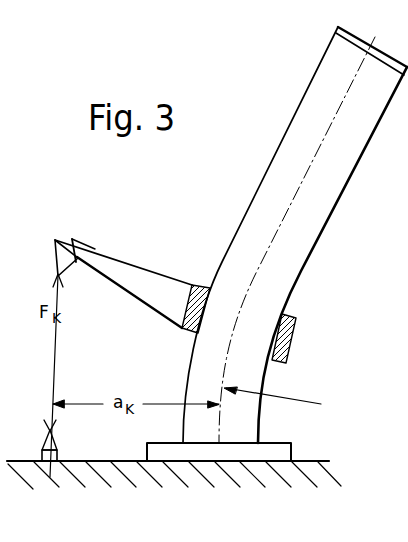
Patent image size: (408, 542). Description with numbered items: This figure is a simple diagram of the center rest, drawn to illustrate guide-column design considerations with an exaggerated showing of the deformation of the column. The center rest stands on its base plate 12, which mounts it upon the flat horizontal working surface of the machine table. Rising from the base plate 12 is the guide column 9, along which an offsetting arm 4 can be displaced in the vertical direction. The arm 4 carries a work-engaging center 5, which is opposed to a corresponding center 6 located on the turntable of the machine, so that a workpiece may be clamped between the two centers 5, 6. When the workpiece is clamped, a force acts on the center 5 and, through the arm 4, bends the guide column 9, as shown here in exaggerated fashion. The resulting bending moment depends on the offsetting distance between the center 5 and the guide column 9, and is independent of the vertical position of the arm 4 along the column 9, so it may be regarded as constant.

The offsetting arm 4 is at (141, 279).
The work-engaging center 5 is at (55, 258).
The center 6 is at (43, 448).
The guide column 9 is at (312, 107).
The base plate 12 is at (277, 457).